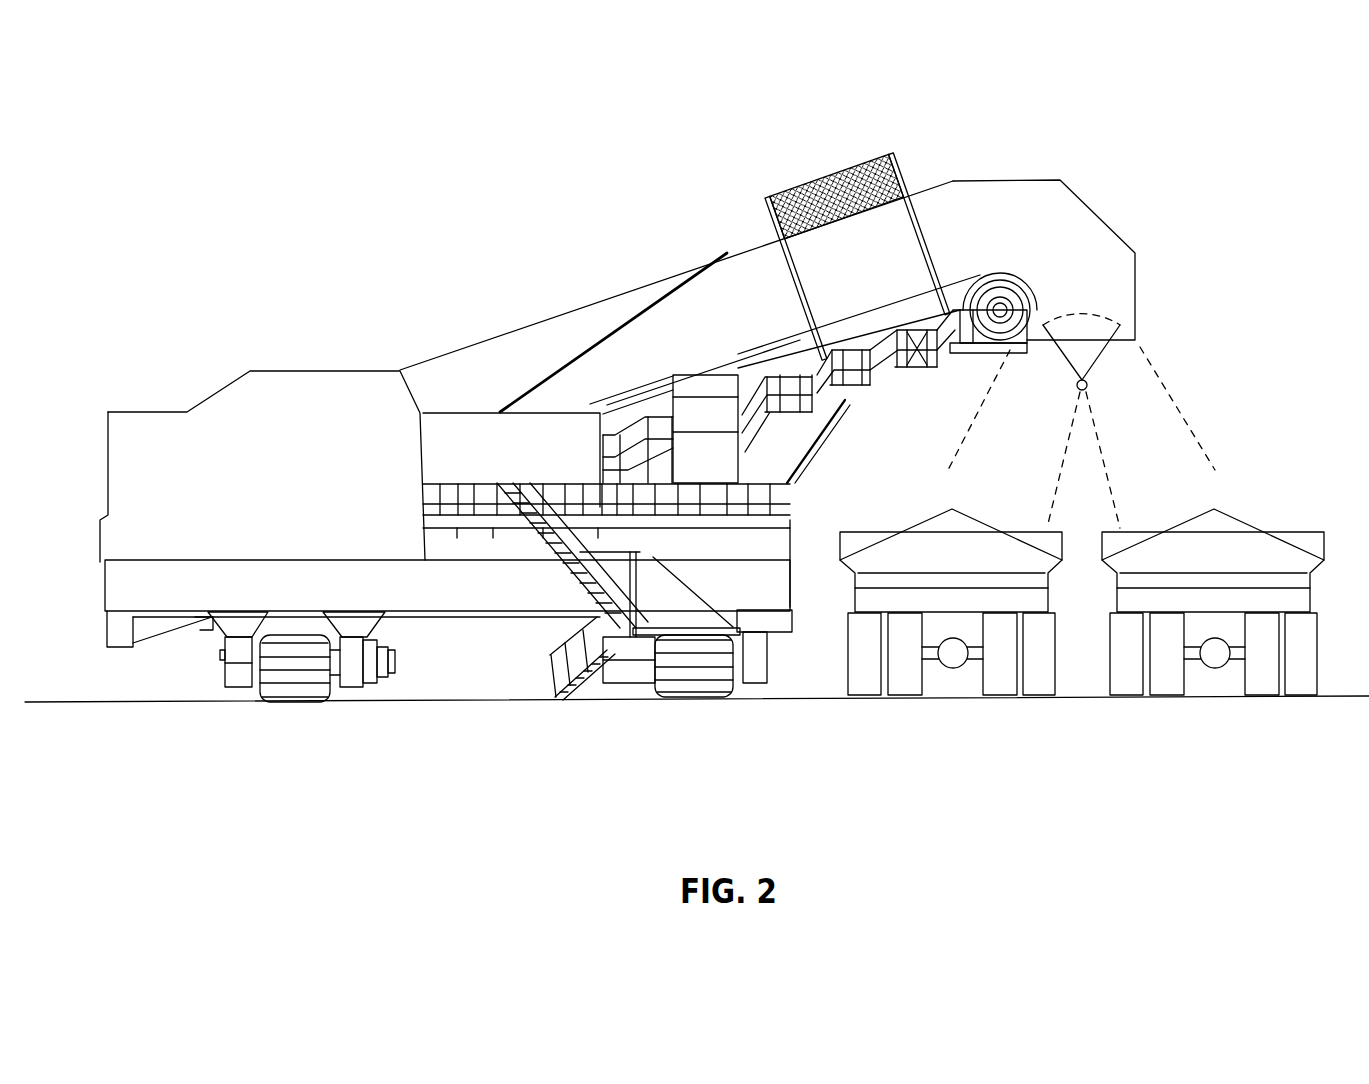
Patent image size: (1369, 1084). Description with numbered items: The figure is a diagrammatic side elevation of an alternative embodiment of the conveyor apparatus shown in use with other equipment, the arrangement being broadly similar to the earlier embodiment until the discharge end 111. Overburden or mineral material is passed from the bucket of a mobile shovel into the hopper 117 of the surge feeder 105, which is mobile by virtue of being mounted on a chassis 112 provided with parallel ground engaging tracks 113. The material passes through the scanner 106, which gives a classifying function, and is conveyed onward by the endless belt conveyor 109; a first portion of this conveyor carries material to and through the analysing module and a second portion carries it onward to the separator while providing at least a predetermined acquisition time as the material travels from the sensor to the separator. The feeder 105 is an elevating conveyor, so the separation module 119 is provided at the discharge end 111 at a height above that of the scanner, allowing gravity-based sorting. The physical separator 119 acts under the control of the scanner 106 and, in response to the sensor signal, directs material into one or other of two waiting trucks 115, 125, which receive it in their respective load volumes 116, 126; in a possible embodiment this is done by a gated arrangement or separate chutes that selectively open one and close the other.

The surge feeder 105 is at (582, 240).
The scanner 106 is at (842, 173).
The endless belt conveyor 109 is at (770, 350).
The discharge end 111 is at (1125, 176).
The chassis 112 is at (130, 595).
The ground engaging tracks 113 is at (300, 703).
The truck 115 is at (1207, 722).
The load volume 116 is at (1227, 530).
The hopper 117 is at (292, 405).
The separation module 119 is at (1087, 330).
The truck 125 is at (960, 716).
The load volume 126 is at (937, 537).